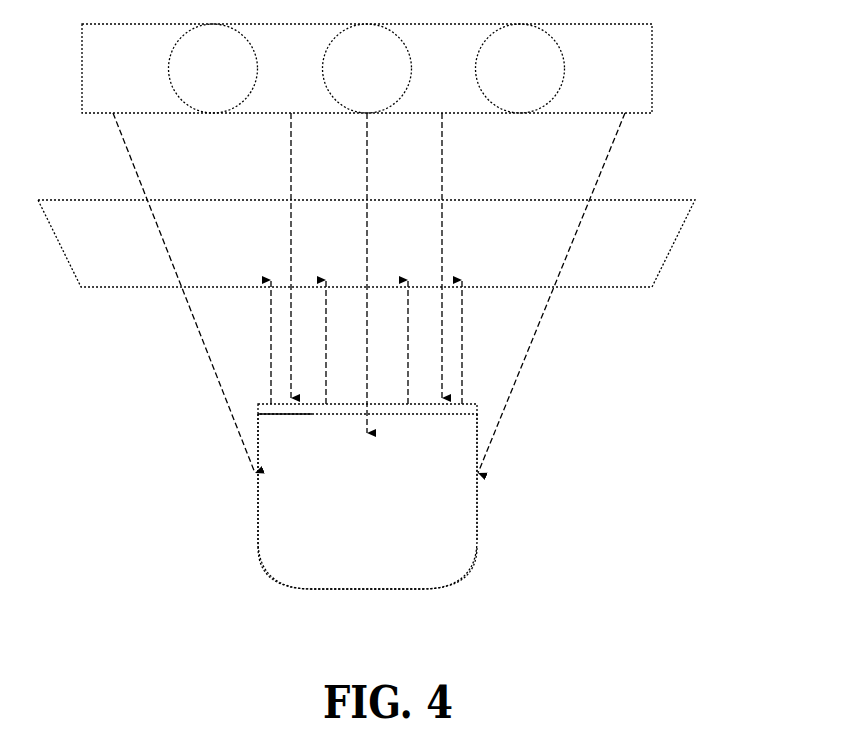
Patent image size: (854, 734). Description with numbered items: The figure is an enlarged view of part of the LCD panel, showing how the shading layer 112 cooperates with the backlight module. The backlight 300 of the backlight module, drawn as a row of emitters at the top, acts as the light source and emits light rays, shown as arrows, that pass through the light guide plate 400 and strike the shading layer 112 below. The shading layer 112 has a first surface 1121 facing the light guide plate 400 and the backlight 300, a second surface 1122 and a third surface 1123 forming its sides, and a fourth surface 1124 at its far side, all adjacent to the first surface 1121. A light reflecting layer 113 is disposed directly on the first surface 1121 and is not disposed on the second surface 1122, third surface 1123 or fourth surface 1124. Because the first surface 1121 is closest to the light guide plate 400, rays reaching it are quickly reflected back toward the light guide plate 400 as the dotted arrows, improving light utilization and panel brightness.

The backlight 300 is at (652, 68).
The light guide plate 400 is at (672, 250).
The shading layer 112 is at (312, 589).
The light reflecting layer 113 is at (387, 414).
The first surface 1121 is at (416, 414).
The second surface 1122 is at (258, 517).
The third surface 1123 is at (477, 520).
The fourth surface 1124 is at (313, 535).